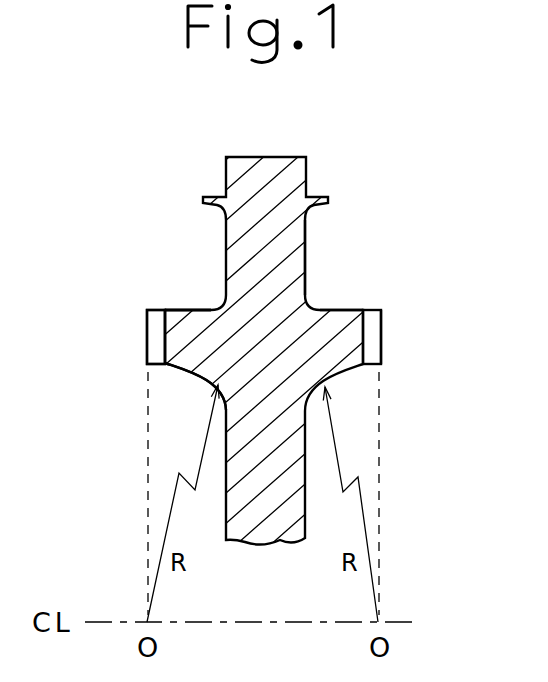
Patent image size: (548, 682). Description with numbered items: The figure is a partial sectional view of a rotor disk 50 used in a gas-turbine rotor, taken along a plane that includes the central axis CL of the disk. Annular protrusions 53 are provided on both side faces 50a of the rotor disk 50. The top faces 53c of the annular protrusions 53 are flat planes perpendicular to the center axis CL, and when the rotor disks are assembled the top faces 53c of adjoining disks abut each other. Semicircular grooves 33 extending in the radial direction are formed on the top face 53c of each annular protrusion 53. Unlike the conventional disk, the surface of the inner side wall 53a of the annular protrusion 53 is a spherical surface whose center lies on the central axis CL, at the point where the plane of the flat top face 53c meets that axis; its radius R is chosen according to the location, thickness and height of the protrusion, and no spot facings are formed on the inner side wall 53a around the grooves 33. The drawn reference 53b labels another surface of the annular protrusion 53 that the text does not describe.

The rotor disk 50 is at (276, 141).
The side face 50a is at (307, 248).
The annular protrusion 53 is at (369, 297).
The inner side wall 53a is at (183, 368).
The flange end face 53b is at (192, 308).
The top face 53c is at (382, 340).
The semicircular groove 33 is at (157, 335).